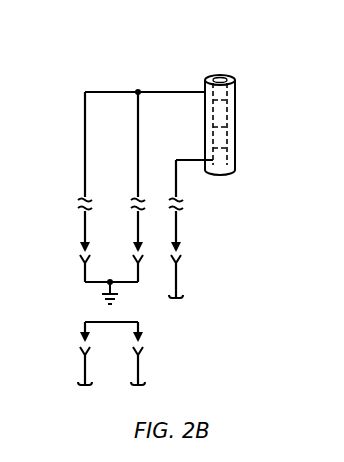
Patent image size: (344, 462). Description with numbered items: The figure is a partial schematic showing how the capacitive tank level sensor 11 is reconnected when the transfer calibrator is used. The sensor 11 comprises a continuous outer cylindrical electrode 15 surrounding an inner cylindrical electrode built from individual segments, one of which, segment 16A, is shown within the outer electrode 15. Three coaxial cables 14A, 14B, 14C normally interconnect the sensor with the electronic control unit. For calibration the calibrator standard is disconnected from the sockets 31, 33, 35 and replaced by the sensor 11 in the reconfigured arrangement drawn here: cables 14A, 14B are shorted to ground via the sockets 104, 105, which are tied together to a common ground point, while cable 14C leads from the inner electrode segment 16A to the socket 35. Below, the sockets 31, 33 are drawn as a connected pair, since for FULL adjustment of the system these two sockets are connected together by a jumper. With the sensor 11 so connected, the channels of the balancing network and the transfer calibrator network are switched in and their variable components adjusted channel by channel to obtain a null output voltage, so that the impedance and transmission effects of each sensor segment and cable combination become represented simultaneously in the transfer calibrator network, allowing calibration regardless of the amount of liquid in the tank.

The capacitive tank level sensor 11 is at (253, 98).
The coaxial cable 14A is at (85, 137).
The coaxial cable 14B is at (138, 106).
The coaxial cable 14C is at (188, 160).
The outer cylindrical electrode 15 is at (238, 80).
The inner electrode segment 16A is at (228, 162).
The socket 104 is at (80, 258).
The socket 105 is at (141, 258).
The socket 35 is at (181, 260).
The socket 31 is at (80, 352).
The socket 33 is at (143, 352).